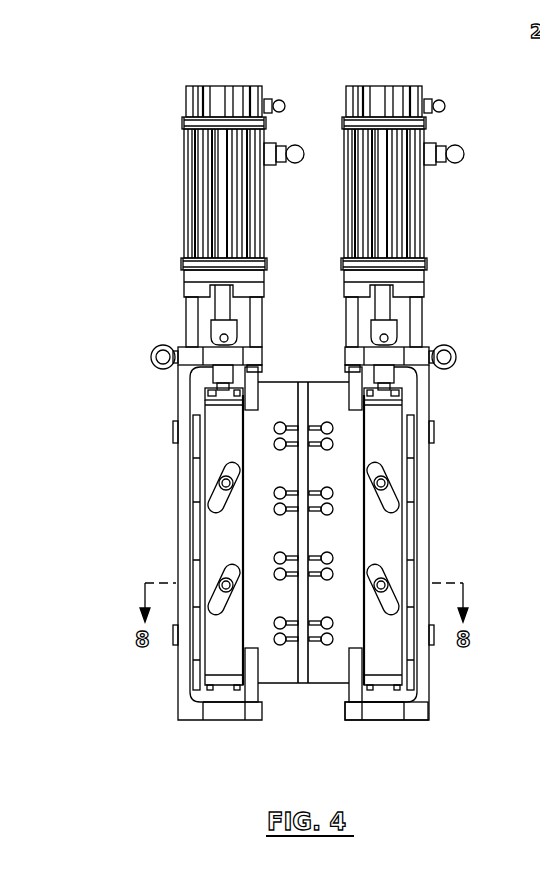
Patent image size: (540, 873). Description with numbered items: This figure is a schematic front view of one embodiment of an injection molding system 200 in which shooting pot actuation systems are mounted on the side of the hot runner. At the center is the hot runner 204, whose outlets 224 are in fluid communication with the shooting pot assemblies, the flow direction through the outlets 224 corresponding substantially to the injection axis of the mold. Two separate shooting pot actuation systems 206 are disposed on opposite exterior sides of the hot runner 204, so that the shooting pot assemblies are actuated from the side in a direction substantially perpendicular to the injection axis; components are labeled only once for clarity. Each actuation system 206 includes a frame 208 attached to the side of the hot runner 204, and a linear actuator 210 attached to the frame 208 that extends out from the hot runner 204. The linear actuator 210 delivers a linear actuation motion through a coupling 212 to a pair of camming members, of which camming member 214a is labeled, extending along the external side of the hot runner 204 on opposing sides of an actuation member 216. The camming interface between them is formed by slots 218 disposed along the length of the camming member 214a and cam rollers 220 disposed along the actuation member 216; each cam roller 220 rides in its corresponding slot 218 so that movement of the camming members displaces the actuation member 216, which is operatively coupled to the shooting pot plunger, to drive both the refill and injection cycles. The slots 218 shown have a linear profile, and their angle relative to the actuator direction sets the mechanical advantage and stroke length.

The injection molding system 200 is at (166, 93).
The linear actuator 210 is at (423, 222).
The coupling 212 is at (392, 328).
The frame 208 is at (430, 400).
The camming member 214a is at (386, 543).
The actuation member 216 is at (392, 498).
The slots 218 is at (220, 506).
The cam rollers 220 is at (385, 482).
The outlets 224 is at (275, 428).
The hot runner 204 is at (305, 684).
The shooting pot actuation system 206 is at (430, 728).